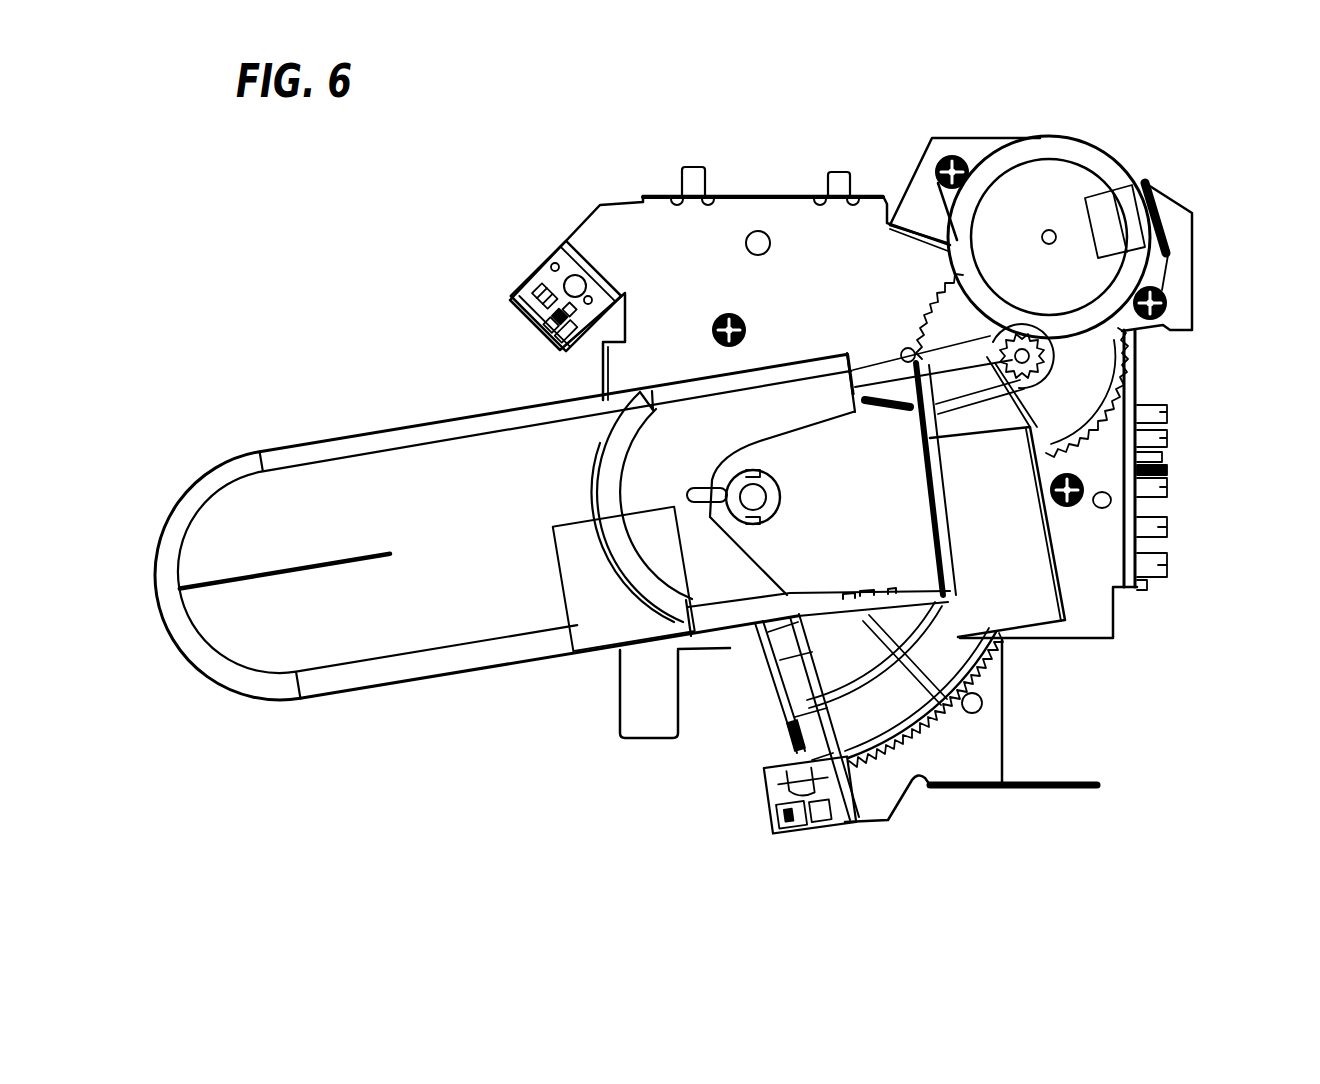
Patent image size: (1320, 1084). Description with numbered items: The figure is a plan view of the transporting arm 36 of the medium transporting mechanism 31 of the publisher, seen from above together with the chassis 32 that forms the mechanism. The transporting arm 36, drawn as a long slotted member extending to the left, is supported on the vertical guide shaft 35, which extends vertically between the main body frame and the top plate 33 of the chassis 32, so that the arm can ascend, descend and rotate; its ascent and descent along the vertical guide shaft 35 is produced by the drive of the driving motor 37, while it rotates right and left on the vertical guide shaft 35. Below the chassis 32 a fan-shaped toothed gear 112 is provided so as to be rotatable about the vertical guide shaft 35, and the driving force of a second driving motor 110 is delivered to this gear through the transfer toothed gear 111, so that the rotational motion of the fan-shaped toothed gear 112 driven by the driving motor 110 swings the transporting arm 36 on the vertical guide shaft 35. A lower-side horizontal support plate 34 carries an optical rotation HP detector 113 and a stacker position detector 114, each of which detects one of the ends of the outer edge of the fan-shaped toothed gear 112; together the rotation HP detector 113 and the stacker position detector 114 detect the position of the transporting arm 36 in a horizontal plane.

The medium transporting mechanism 31 is at (851, 440).
The chassis 32 is at (805, 650).
The top plate 33 is at (812, 578).
The lower-side horizontal support plate 34 is at (795, 230).
The vertical guide shaft 35 is at (715, 520).
The transporting arm 36 is at (327, 432).
The driving motor 37 is at (1033, 603).
The driving motor 110 is at (1055, 190).
The transfer toothed gear 111 is at (1085, 367).
The fan-shaped toothed gear 112 is at (880, 762).
The rotation HP detector 113 is at (797, 832).
The stacker position detector 114 is at (530, 293).